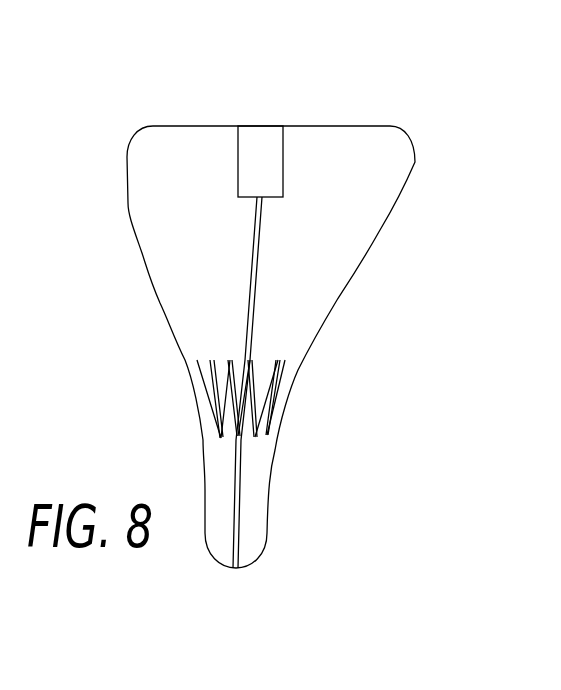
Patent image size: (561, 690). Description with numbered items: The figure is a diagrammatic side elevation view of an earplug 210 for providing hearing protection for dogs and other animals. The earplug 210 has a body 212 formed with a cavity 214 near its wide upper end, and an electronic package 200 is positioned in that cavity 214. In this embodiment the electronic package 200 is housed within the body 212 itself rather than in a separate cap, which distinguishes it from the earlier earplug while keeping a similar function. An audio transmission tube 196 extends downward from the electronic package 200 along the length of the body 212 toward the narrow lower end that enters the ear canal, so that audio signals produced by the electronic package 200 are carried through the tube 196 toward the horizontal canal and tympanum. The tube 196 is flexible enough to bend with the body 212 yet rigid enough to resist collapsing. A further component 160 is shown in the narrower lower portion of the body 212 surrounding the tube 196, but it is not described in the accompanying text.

The earplug 210 is at (303, 288).
The body 212 is at (415, 163).
The cavity 214 is at (283, 147).
The electronic package 200 is at (291, 137).
The audio transmission tube 196 is at (252, 263).
The coil spring 160 is at (283, 373).